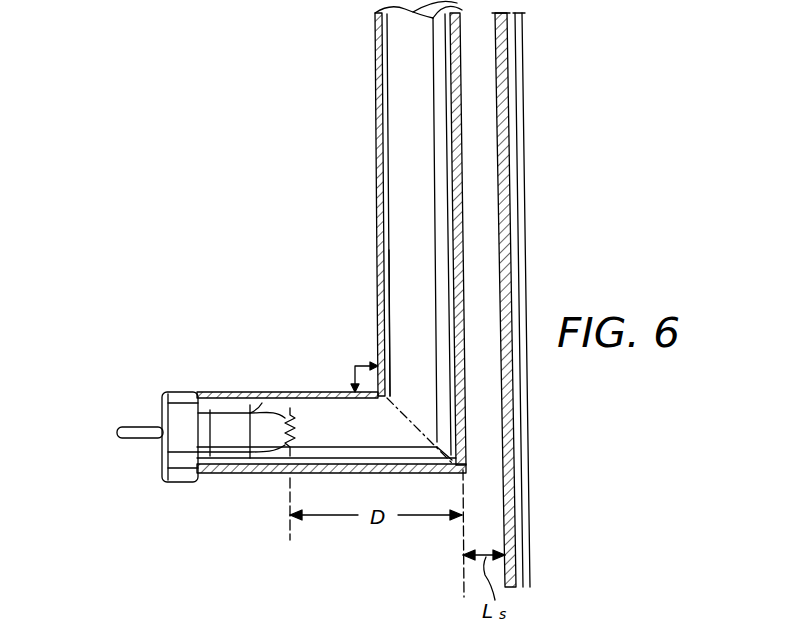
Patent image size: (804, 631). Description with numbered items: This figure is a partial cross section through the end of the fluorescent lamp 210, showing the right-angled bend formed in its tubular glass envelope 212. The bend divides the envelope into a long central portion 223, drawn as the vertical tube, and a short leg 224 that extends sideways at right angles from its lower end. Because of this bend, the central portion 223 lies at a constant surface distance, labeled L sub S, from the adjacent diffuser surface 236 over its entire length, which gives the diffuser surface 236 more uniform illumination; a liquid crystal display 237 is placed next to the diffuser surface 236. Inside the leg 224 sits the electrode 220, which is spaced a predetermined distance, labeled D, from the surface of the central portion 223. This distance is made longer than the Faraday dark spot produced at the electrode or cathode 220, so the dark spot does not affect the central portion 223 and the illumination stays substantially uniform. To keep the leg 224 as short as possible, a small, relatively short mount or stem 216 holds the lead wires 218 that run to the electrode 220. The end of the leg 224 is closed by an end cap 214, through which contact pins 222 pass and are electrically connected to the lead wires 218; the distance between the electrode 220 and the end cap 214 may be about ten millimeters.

The fluorescent lamp 210 is at (366, 196).
The tubular glass envelope 212 is at (376, 148).
The central portion 223 is at (378, 302).
The end cap 214 is at (175, 392).
The contact pins 222 is at (132, 426).
The lead wires 218 is at (268, 400).
The electrode 220 is at (295, 430).
The leg 224 is at (218, 477).
The mount or stem 216 is at (250, 476).
The diffuser surface 236 is at (499, 119).
The liquid crystal display 237 is at (523, 185).